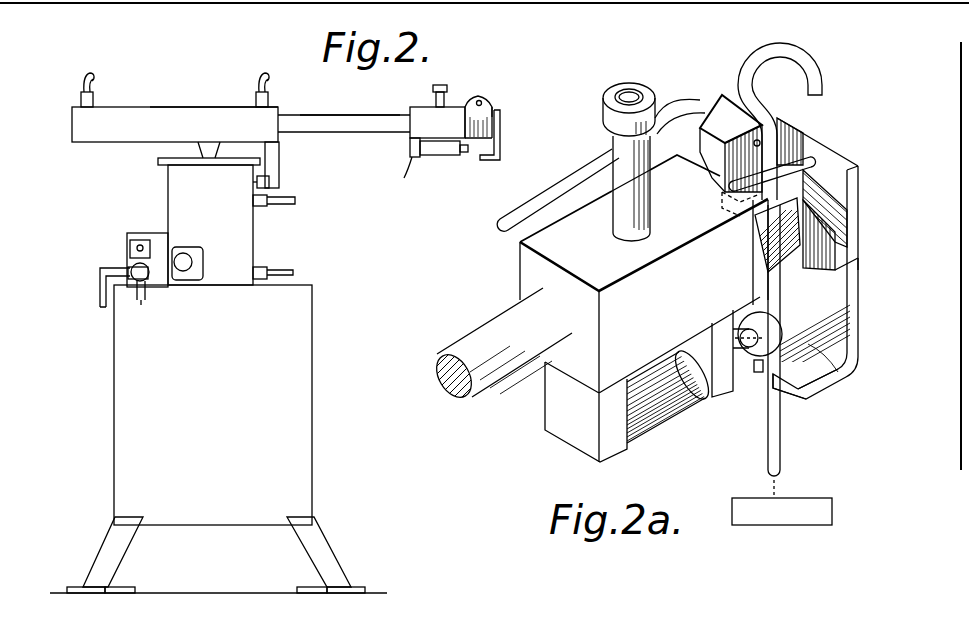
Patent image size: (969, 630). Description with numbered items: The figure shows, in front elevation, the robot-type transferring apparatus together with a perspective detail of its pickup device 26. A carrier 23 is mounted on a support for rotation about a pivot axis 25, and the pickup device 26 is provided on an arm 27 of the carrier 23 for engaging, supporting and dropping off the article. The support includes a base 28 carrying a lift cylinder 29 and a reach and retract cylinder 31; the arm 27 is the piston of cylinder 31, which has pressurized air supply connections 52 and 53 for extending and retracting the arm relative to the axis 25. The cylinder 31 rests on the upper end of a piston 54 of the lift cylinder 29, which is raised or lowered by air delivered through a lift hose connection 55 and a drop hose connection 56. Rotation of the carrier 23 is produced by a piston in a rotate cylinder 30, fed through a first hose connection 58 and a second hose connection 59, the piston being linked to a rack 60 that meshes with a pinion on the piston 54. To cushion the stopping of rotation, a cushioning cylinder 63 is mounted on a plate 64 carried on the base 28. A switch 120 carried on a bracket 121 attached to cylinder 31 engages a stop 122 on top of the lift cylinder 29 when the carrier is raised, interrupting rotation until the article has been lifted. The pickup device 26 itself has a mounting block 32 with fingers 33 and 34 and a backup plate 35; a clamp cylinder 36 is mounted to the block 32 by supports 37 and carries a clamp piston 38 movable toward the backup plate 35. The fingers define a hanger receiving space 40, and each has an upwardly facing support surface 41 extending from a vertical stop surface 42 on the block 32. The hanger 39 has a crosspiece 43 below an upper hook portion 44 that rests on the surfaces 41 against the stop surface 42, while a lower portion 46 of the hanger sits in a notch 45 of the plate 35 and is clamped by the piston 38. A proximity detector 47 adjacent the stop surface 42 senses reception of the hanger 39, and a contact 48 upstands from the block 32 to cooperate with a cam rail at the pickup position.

In FIG. 2, the carrier 23 is at (340, 110).
In FIG. 2, the pivot axis 25 is at (206, 117).
In FIG. 2, the pickup device 26 is at (470, 89).
In FIG. 2A, the pickup device 26 is at (826, 86).
In FIG. 2, the arm 27 is at (373, 126).
In FIG. 2A, the arm 27 is at (495, 388).
In FIG. 2, the base 28 is at (300, 388).
In FIG. 2, the lift cylinder 29 is at (168, 185).
In FIG. 2, the rotate cylinder 30 is at (150, 278).
In FIG. 2, the reach and retract cylinder 31 is at (225, 107).
In FIG. 2A, the mounting block 32 is at (543, 247).
In FIG. 2A, the finger 33 is at (850, 210).
In FIG. 2A, the finger 34 is at (770, 263).
In FIG. 2A, the backup plate 35 is at (858, 297).
In FIG. 2A, the clamp cylinder 36 is at (665, 410).
In FIG. 2A, the supports 37 is at (568, 425).
In FIG. 2A, the clamp piston 38 is at (835, 377).
In FIG. 2A, the hanger 39 is at (789, 441).
In FIG. 2A, the hanger receiving space 40 is at (822, 243).
In FIG. 2A, the support surface 41 is at (808, 160).
In FIG. 2A, the stop surface 42 is at (800, 137).
In FIG. 2A, the crosspiece 43 is at (826, 130).
In FIG. 2A, the upper hook portion 44 is at (795, 48).
In FIG. 2A, the notch 45 is at (745, 374).
In FIG. 2A, the lower portion 46 is at (778, 392).
In FIG. 2A, the proximity detector 47 is at (724, 98).
In FIG. 2A, the contact 48 is at (625, 84).
In FIG. 2, the pressurized air supply connection 52 is at (90, 96).
In FIG. 2, the pressurized air supply connection 53 is at (266, 101).
In FIG. 2, the piston 54 is at (198, 148).
In FIG. 2, the lift hose connection 55 is at (268, 268).
In FIG. 2, the drop hose connection 56 is at (262, 206).
In FIG. 2, the first hose connection 58 is at (140, 300).
In FIG. 2, the second hose connection 59 is at (100, 296).
In FIG. 2, the rack 60 is at (187, 268).
In FIG. 2, the cushioning cylinder 63 is at (130, 245).
In FIG. 2, the plate 64 is at (158, 235).
In FIG. 2, the switch 120 is at (270, 186).
In FIG. 2, the bracket 121 is at (264, 180).
In FIG. 2, the stop 122 is at (272, 160).